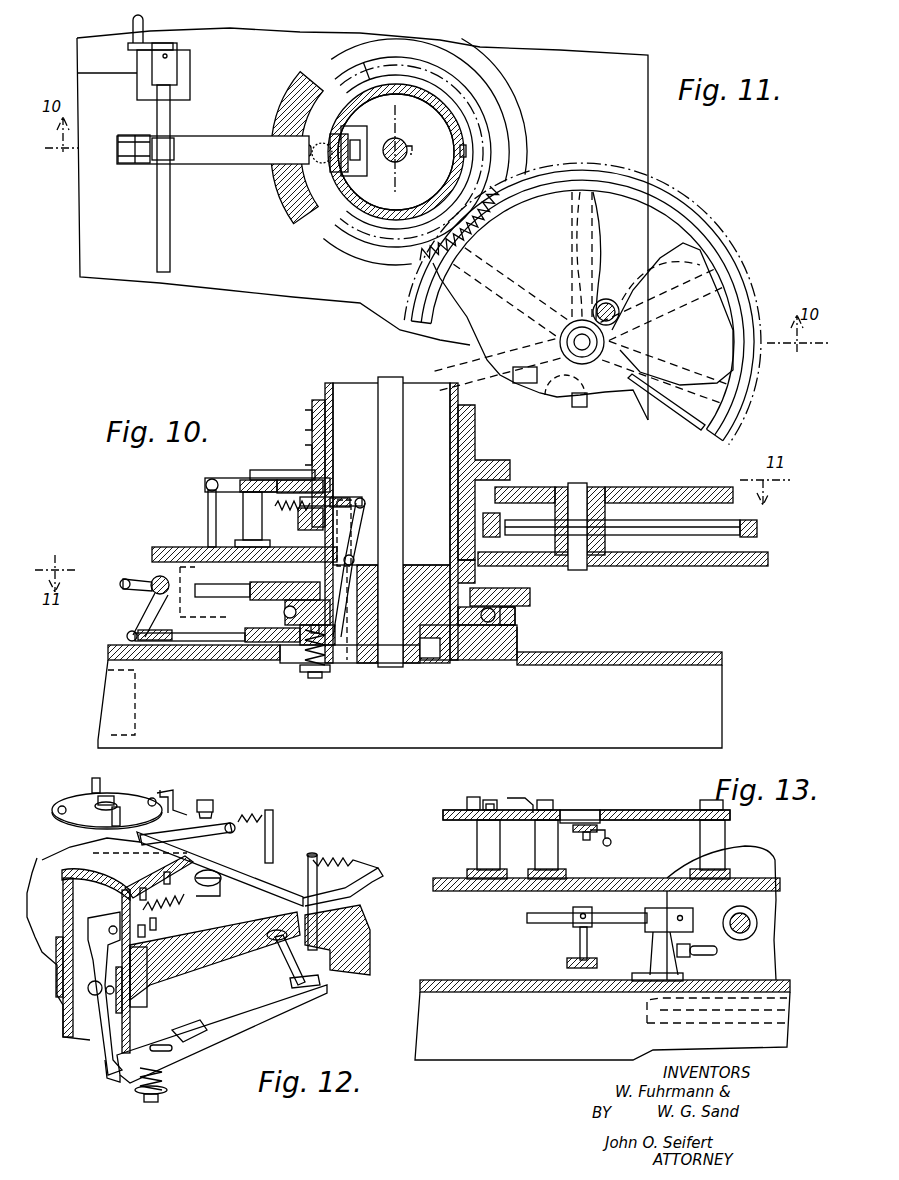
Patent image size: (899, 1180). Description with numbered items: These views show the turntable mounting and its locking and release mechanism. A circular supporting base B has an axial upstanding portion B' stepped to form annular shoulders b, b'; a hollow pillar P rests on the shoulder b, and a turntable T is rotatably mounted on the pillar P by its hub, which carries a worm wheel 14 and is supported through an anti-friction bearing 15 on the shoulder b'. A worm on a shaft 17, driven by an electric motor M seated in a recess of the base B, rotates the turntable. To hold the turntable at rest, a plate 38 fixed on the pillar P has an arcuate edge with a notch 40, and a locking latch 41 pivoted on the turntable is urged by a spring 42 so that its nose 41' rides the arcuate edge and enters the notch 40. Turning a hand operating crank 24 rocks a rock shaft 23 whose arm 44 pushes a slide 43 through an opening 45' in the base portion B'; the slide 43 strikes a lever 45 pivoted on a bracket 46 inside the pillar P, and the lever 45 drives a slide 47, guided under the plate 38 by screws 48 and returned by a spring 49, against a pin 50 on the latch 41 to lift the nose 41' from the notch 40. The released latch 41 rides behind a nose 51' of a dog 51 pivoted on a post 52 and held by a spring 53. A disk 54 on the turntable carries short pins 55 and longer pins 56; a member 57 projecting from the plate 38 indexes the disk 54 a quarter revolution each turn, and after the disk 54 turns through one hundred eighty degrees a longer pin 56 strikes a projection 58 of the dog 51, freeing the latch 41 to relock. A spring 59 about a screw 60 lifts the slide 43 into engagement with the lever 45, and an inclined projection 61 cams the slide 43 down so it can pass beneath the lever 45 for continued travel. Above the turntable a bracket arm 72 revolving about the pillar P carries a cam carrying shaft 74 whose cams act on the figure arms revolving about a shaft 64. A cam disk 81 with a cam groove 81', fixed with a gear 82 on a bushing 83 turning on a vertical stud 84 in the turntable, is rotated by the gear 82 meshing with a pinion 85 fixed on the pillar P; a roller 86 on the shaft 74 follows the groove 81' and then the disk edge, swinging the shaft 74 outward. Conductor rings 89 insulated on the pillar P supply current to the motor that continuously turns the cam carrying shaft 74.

In FIG. 10, the worm wheel 14 is at (533, 598).
In FIG. 11, the anti-friction bearing 15 is at (340, 70).
In FIG. 10, the anti-friction bearing 15 is at (498, 618).
In FIG. 10, the shaft 17 is at (226, 587).
In FIG. 11, the rock shaft 23 is at (172, 118).
In FIG. 10, the rock shaft 23 is at (160, 575).
In FIG. 12, the rock shaft 23 is at (270, 950).
In FIG. 13, the rock shaft 23 is at (623, 923).
In FIG. 11, the hand operating crank 24 is at (178, 48).
In FIG. 10, the hand operating crank 24 is at (122, 583).
In FIG. 13, the hand operating crank 24 is at (691, 944).
In FIG. 10, the plate 38 is at (282, 488).
In FIG. 12, the plate 38 is at (140, 880).
In FIG. 12, the notch 40 is at (172, 872).
In FIG. 10, the locking latch 41 is at (267, 464).
In FIG. 12, the locking latch 41 is at (314, 887).
In FIG. 13, the locking latch 41 is at (586, 803).
In FIG. 12, the latch nose 41' is at (220, 868).
In FIG. 13, the latch nose 41' is at (592, 806).
In FIG. 10, the spring 42 is at (210, 480).
In FIG. 12, the spring 42 is at (345, 865).
In FIG. 11, the slide 43 is at (210, 165).
In FIG. 10, the slide 43 is at (220, 646).
In FIG. 12, the slide 43 is at (250, 1018).
In FIG. 13, the slide 43 is at (568, 964).
In FIG. 11, the arm 44 is at (145, 160).
In FIG. 10, the arm 44 is at (132, 618).
In FIG. 12, the arm 44 is at (312, 985).
In FIG. 13, the arm 44 is at (578, 942).
In FIG. 11, the lever 45 is at (373, 142).
In FIG. 10, the lever 45 is at (383, 533).
In FIG. 12, the lever 45 is at (100, 1083).
In FIG. 11, the opening 45' is at (290, 141).
In FIG. 10, the opening 45' is at (286, 613).
In FIG. 10, the bracket 46 is at (325, 580).
In FIG. 12, the bracket 46 is at (90, 992).
In FIG. 10, the slide 47 is at (350, 500).
In FIG. 12, the slide 47 is at (105, 913).
In FIG. 13, the slide 47 is at (580, 830).
In FIG. 10, the screws 48 is at (285, 490).
In FIG. 12, the screws 48 is at (170, 910).
In FIG. 10, the spring 49 is at (300, 522).
In FIG. 12, the spring 49 is at (160, 932).
In FIG. 13, the spring 49 is at (608, 840).
In FIG. 10, the pin 50 is at (250, 502).
In FIG. 12, the pin 50 is at (213, 885).
In FIG. 13, the pin 50 is at (585, 836).
In FIG. 12, the dog 51 is at (123, 813).
In FIG. 13, the dog 51 is at (509, 827).
In FIG. 12, the dog nose 51' is at (187, 806).
In FIG. 12, the post 52 is at (212, 810).
In FIG. 12, the spring 53 is at (255, 813).
In FIG. 12, the disk 54 is at (75, 790).
In FIG. 13, the disk 54 is at (472, 822).
In FIG. 12, the pins 55 is at (152, 800).
In FIG. 13, the pins 55 is at (546, 800).
In FIG. 12, the pins 56 is at (97, 780).
In FIG. 13, the pins 56 is at (473, 797).
In FIG. 10, the member 57 is at (282, 470).
In FIG. 12, the projection 58 is at (165, 790).
In FIG. 13, the projection 58 is at (520, 797).
In FIG. 10, the spring 59 is at (326, 656).
In FIG. 12, the spring 59 is at (165, 1077).
In FIG. 10, the screw 60 is at (310, 672).
In FIG. 12, the screw 60 is at (158, 1104).
In FIG. 11, the projection 61 is at (262, 163).
In FIG. 10, the projection 61 is at (255, 632).
In FIG. 12, the projection 61 is at (185, 1027).
In FIG. 11, the shaft 64 is at (407, 143).
In FIG. 10, the shaft 64 is at (411, 522).
In FIG. 10, the bracket arm 72 is at (510, 470).
In FIG. 11, the cam carrying shaft 74 is at (628, 326).
In FIG. 11, the cam disk 81 is at (594, 304).
In FIG. 10, the cam disk 81 is at (614, 486).
In FIG. 11, the cam groove 81' is at (614, 256).
In FIG. 11, the gear 82 is at (686, 410).
In FIG. 10, the gear 82 is at (757, 530).
In FIG. 11, the bushing 83 is at (570, 326).
In FIG. 10, the bushing 83 is at (596, 487).
In FIG. 11, the vertical stud 84 is at (593, 340).
In FIG. 10, the vertical stud 84 is at (576, 483).
In FIG. 11, the pinion 85 is at (465, 105).
In FIG. 10, the pinion 85 is at (486, 528).
In FIG. 11, the roller 86 is at (612, 300).
In FIG. 10, the conductor rings 89 is at (312, 420).
In FIG. 11, the supporting base B is at (362, 224).
In FIG. 10, the supporting base B is at (410, 686).
In FIG. 13, the supporting base B is at (602, 1020).
In FIG. 11, the axial upstanding portion B' is at (287, 158).
In FIG. 10, the axial upstanding portion B' is at (468, 666).
In FIG. 11, the annular shoulder b is at (372, 186).
In FIG. 10, the annular shoulder b is at (486, 657).
In FIG. 10, the annular shoulder b' is at (502, 657).
In FIG. 11, the hollow pillar P is at (418, 210).
In FIG. 10, the hollow pillar P is at (452, 408).
In FIG. 12, the hollow pillar P is at (85, 1035).
In FIG. 10, the turntable T is at (654, 568).
In FIG. 12, the turntable T is at (360, 935).
In FIG. 13, the turntable T is at (452, 892).
In FIG. 13, the electric motor M is at (765, 848).